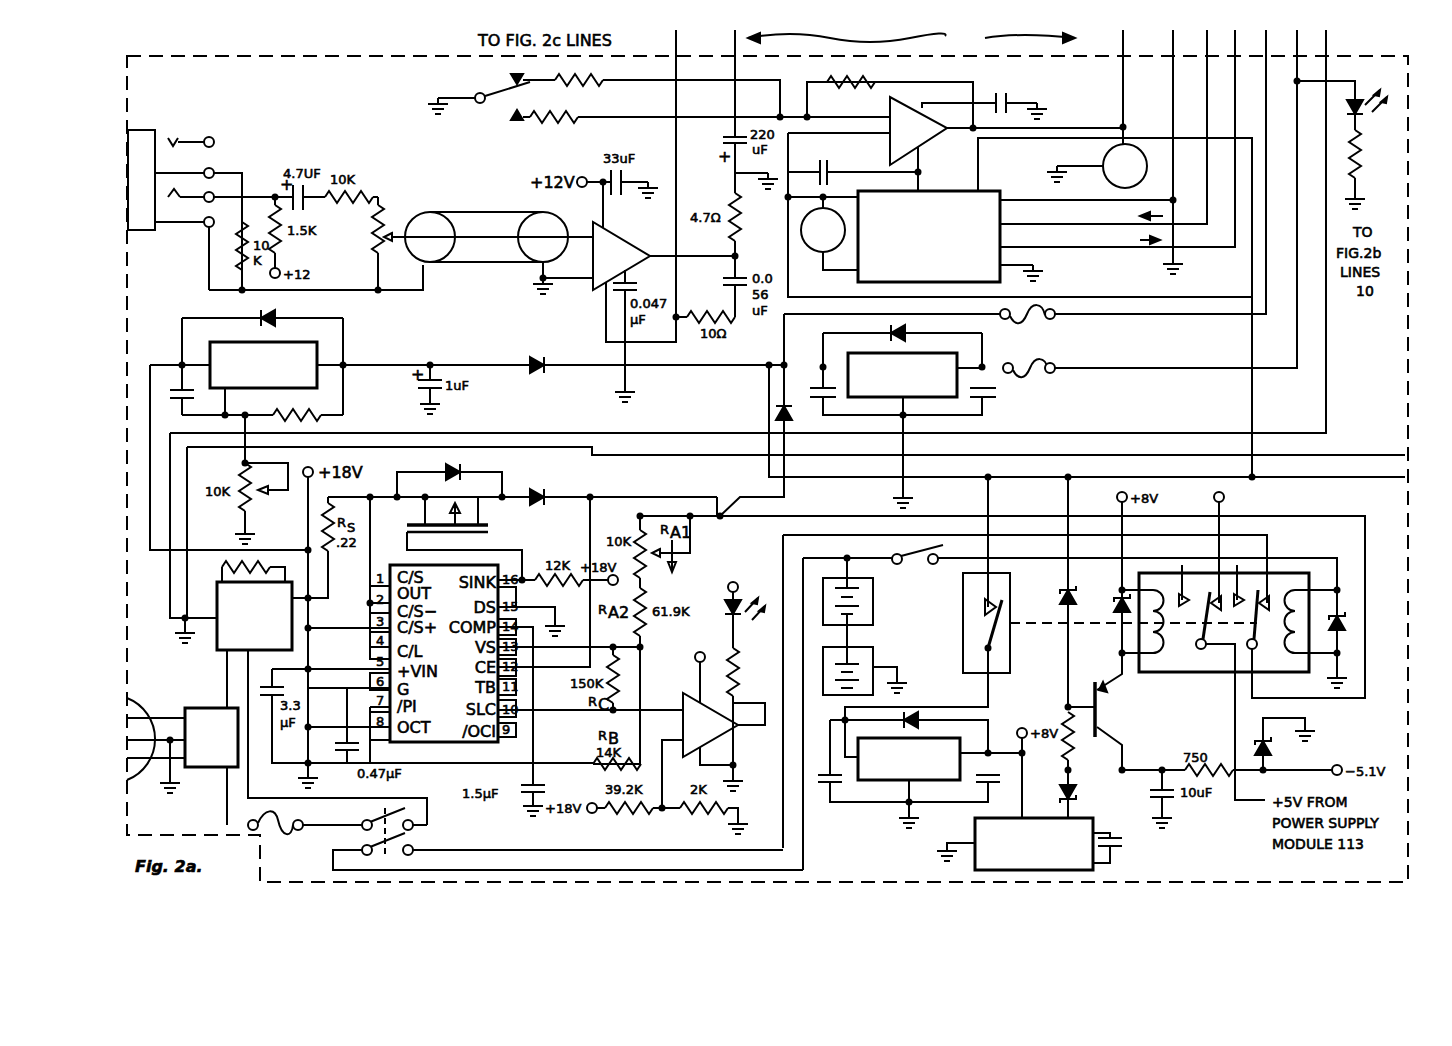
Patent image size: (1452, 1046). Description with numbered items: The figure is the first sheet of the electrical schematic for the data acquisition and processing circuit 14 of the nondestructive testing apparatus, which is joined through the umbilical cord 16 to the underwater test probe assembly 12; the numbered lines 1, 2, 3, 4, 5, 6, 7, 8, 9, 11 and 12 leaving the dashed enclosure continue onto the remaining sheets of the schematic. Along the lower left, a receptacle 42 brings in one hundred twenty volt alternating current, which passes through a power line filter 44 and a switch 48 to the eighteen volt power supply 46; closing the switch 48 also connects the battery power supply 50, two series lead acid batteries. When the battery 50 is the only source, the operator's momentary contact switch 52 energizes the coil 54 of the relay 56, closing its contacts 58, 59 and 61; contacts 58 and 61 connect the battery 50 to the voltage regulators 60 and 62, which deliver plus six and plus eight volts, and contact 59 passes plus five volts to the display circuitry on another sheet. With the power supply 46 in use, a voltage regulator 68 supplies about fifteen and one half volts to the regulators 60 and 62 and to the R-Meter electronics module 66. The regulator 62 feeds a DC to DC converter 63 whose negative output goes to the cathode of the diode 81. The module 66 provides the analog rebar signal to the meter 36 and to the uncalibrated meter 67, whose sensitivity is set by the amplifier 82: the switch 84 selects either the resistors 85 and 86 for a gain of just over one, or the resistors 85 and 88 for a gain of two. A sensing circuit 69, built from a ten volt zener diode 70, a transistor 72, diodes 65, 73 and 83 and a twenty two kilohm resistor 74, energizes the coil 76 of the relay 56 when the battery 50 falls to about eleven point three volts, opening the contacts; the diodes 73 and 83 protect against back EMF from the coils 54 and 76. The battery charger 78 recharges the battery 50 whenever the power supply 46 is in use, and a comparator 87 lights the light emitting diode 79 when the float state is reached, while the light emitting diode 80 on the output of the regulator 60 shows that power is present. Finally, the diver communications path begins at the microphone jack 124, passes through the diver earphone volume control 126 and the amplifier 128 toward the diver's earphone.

The line 1 to FIG. 2c 1 is at (641, 185).
The line 2 to FIG. 2c 2 is at (724, 173).
The line 3 is at (1113, 86).
The line 4 is at (1169, 151).
The line 5 is at (1103, 126).
The line 6 is at (1117, 138).
The line 7 is at (1160, 171).
The line 8 is at (1176, 198).
The line 9 is at (748, 231).
The line 11 is at (796, 441).
The underwater test probe assembly 12 is at (1087, 434).
The data acquisition and processing circuit 14 is at (285, 55).
The umbilical cord 16 is at (911, 41).
The meter 36 is at (822, 232).
The receptacle 42 is at (140, 778).
The power line filter 44 is at (211, 737).
The eighteen volt power supply 46 is at (212, 652).
The switch 48 is at (373, 818).
The battery power supply 50 is at (880, 658).
The momentary contact switch 52 is at (905, 556).
The coil 54 is at (1270, 672).
The relay 56 is at (1200, 660).
The relay contact 58 is at (1270, 610).
The relay contact 59 is at (1236, 683).
The voltage regulator 60 is at (919, 406).
The relay contact 61 is at (985, 626).
The voltage regulator 62 is at (933, 783).
The DC to DC converter 63 is at (1054, 843).
The diode 65 is at (1083, 794).
The R-Meter electronics module 66 is at (988, 191).
The meter 67 is at (1097, 166).
The voltage regulator 68 is at (467, 430).
The sensing circuit 69 is at (1062, 588).
The ten volt zener diode 70 is at (1090, 596).
The transistor 72 is at (1099, 713).
The diode 73 is at (1110, 596).
The twenty two Kohm resistor 74 is at (1068, 714).
The coil 76 is at (1164, 674).
The battery charger 78 is at (483, 566).
The light emitting diode 79 is at (722, 608).
The light emitting diode 80 is at (1362, 92).
The diode 81 is at (915, 715).
The amplifier 82 is at (905, 100).
The diode 83 is at (1355, 630).
The switch 84 is at (497, 100).
The resistor 85 is at (830, 78).
The resistor 86 is at (600, 82).
The comparator 87 is at (690, 697).
The resistor 88 is at (538, 120).
The microphone jack 124 is at (150, 130).
The diver earphone volume control 126 is at (394, 236).
The amplifier 128 is at (600, 290).